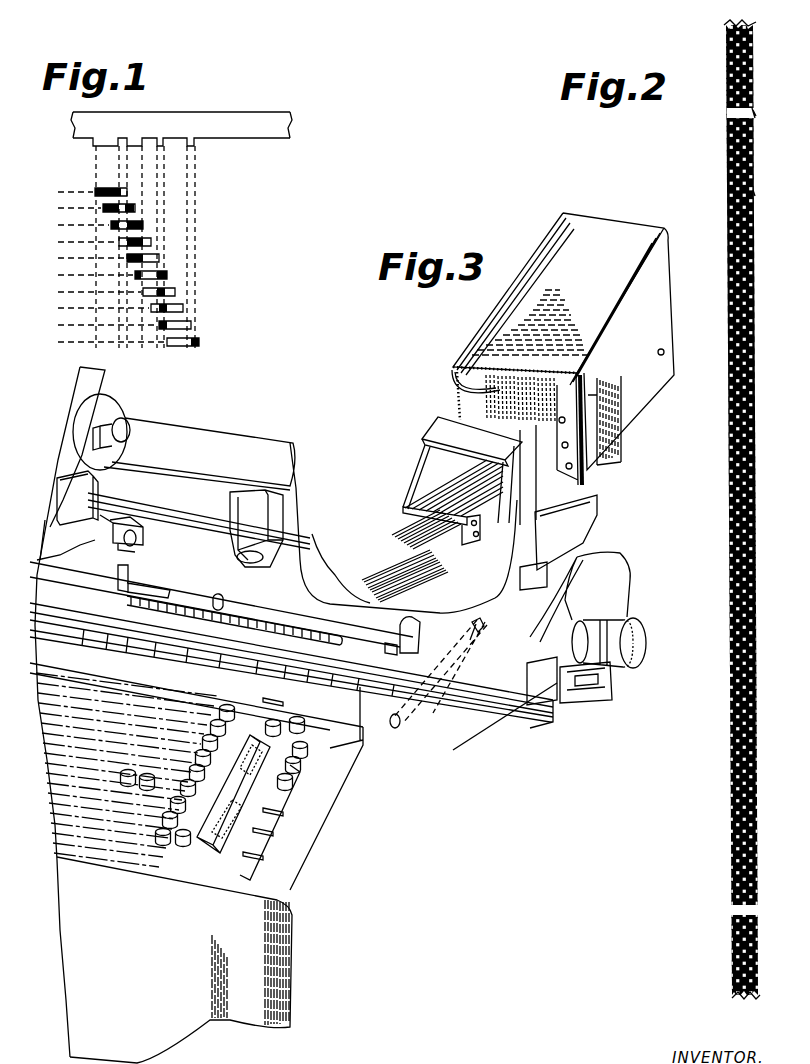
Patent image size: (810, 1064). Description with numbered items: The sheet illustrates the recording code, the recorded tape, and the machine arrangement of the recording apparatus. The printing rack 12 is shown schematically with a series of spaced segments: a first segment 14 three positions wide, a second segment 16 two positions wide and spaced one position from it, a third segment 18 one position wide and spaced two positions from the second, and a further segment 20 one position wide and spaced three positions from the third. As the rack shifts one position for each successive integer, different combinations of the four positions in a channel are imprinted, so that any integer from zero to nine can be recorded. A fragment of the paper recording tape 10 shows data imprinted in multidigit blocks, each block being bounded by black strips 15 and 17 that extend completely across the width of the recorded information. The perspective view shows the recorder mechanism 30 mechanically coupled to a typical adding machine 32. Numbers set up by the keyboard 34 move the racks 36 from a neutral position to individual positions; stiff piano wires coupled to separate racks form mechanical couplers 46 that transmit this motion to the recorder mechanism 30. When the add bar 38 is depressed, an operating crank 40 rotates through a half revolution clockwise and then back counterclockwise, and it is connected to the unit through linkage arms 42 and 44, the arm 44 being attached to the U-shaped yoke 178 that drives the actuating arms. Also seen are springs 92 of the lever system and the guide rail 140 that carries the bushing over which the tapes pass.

In FIG. 1, the paper recording tape 10 is at (135, 208).
In FIG. 2, the paper recording tape 10 is at (726, 113).
In FIG. 1, the printing rack 12 is at (258, 127).
In FIG. 1, the first segment 14 is at (108, 139).
In FIG. 1, the second segment 16 is at (136, 139).
In FIG. 1, the third segment 18 is at (160, 139).
In FIG. 1, the segment 20 is at (190, 139).
In FIG. 2, the black strip 15 is at (755, 193).
In FIG. 2, the black strip 17 is at (755, 115).
In FIG. 3, the recorder mechanism 30 is at (552, 337).
In FIG. 3, the adding machine 32 is at (199, 447).
In FIG. 3, the keyboard 34 is at (165, 830).
In FIG. 3, the racks 36 is at (352, 556).
In FIG. 3, the add bar 38 is at (262, 828).
In FIG. 3, the operating crank 40 is at (397, 728).
In FIG. 3, the linkage arm 42 is at (433, 713).
In FIG. 3, the linkage arm 44 is at (484, 626).
In FIG. 3, the mechanical couplers 46 is at (378, 508).
In FIG. 3, the springs 92 is at (448, 374).
In FIG. 3, the guide rail 140 is at (597, 425).
In FIG. 3, the U-shaped yoke 178 is at (440, 434).